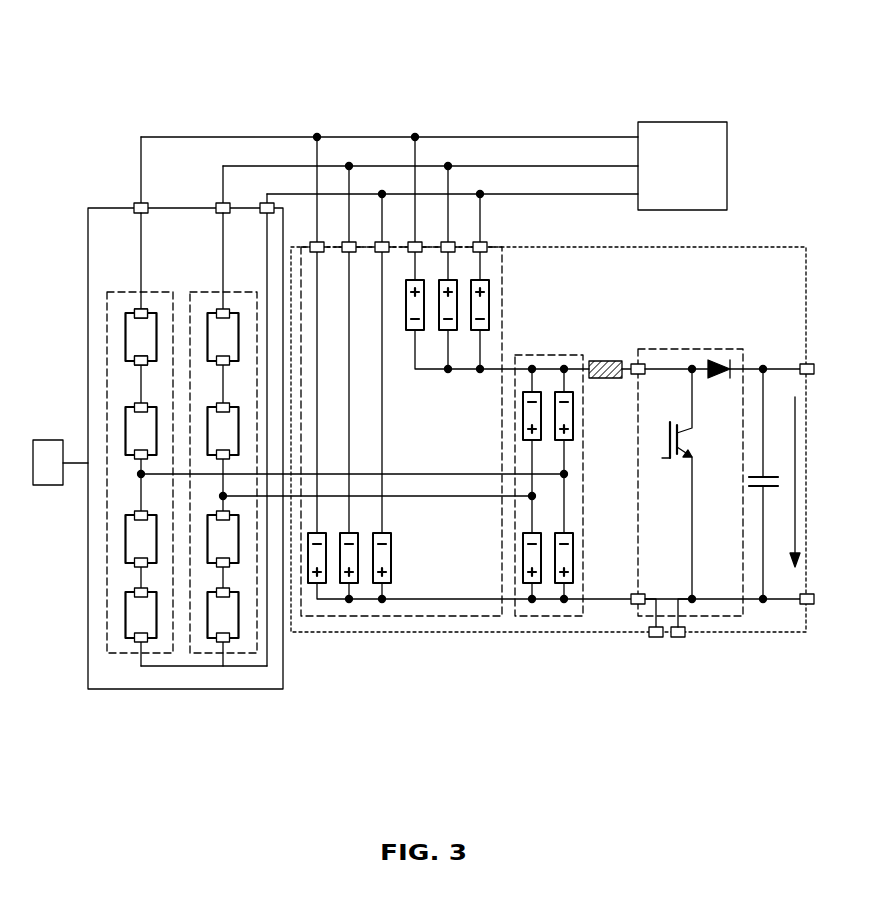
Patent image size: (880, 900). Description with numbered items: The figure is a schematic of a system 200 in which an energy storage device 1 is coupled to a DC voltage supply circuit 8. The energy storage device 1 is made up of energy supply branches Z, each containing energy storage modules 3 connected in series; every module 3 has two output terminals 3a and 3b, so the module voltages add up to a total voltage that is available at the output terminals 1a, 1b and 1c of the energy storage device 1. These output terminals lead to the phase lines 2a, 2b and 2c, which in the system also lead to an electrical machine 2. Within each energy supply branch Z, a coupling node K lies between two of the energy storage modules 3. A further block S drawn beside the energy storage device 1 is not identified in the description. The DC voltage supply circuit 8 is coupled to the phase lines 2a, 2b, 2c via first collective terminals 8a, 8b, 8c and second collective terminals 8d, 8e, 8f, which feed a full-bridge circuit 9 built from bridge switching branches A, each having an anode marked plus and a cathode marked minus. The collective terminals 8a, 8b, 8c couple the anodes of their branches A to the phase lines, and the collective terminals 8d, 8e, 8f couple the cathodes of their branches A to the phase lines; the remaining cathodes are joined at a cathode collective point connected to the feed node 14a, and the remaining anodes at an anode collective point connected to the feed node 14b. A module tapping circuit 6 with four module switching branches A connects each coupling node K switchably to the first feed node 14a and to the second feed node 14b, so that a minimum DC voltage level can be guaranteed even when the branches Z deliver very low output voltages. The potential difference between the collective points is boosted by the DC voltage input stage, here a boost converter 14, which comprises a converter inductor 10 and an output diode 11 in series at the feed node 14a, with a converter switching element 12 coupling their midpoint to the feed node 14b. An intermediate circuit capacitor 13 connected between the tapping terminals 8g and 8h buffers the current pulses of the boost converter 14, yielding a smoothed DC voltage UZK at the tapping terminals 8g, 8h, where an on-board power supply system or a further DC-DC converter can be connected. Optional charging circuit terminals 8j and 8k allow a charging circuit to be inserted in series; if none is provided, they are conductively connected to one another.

The system 200 is at (155, 92).
The energy storage device 1 is at (105, 208).
The output terminal 1a is at (141, 208).
The output terminal 1b is at (223, 208).
The output terminal 1c is at (267, 214).
The electrical machine 2 is at (685, 128).
The phase line 2a is at (251, 137).
The phase line 2b is at (291, 166).
The phase line 2c is at (533, 194).
The energy storage module 3 is at (125, 340).
The output terminal 3a is at (137, 312).
The output terminal 3b is at (137, 362).
The module tapping circuit 6 is at (546, 616).
The DC voltage supply circuit 8 is at (778, 247).
The first collective terminal 8a is at (413, 243).
The first collective terminal 8b is at (446, 243).
The first collective terminal 8c is at (479, 243).
The second collective terminal 8d is at (314, 243).
The second collective terminal 8e is at (347, 243).
The second collective terminal 8f is at (380, 243).
The tapping terminal 8g is at (803, 364).
The tapping terminal 8h is at (803, 606).
The charging circuit terminal 8j is at (654, 640).
The charging circuit terminal 8k is at (680, 640).
The full-bridge circuit 9 is at (428, 616).
The converter inductor 10 is at (604, 361).
The output diode 11 is at (718, 361).
The converter switching element 12 is at (672, 460).
The intermediate circuit capacitor 13 is at (772, 489).
The boost converter 14 is at (727, 616).
The first feed node 14a is at (637, 364).
The second feed node 14b is at (632, 606).
The switching branch A is at (490, 305).
The coupling node K is at (141, 474).
The sensor S is at (40, 485).
The energy supply branch Z is at (107, 583).
The DC voltage UZK is at (795, 397).